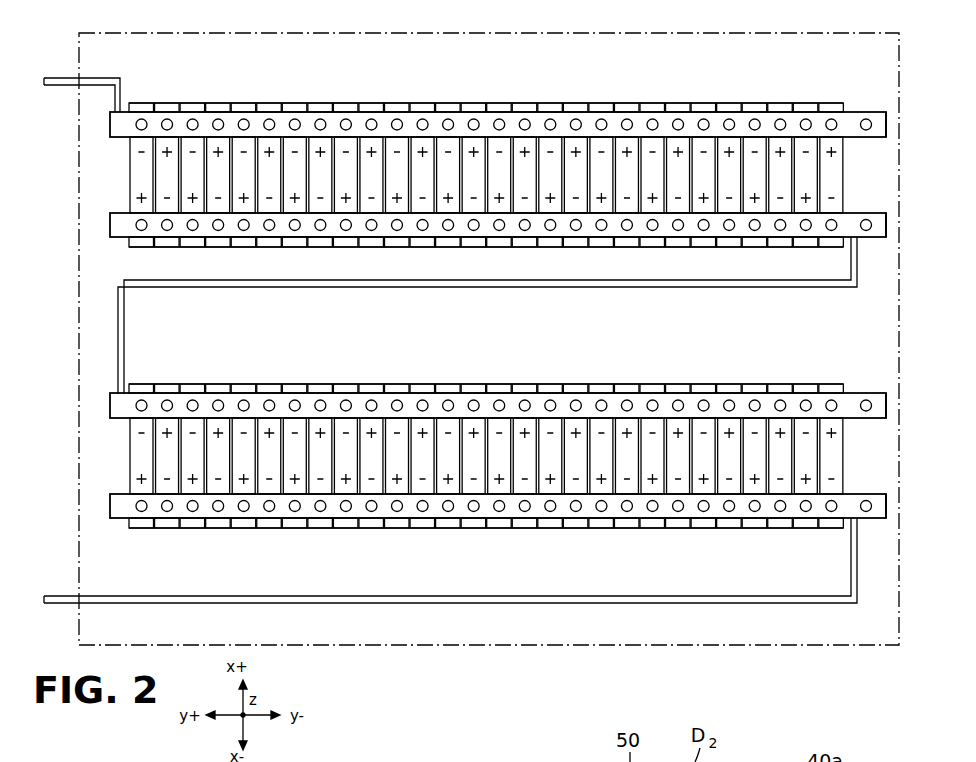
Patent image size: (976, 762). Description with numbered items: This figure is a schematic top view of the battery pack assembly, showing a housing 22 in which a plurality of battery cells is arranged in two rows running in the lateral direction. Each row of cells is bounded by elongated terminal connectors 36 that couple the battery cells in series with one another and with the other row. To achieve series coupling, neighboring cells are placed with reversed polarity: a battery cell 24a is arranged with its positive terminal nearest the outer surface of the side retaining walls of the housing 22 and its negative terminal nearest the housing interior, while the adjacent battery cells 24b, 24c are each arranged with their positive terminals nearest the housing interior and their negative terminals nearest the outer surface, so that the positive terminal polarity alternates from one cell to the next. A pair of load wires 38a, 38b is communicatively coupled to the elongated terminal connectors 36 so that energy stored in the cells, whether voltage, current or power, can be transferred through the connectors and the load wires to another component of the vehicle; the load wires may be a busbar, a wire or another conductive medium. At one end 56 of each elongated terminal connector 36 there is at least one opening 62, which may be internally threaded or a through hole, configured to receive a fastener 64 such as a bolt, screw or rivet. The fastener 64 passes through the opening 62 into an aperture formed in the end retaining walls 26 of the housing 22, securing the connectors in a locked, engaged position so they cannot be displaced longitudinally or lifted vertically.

The housing 22 is at (78, 199).
The battery cell 24a is at (189, 103).
The adjacent battery cell 24b is at (173, 103).
The adjacent battery cell 24c is at (220, 103).
The end retaining wall 26 is at (868, 578).
The elongated terminal connector 36 is at (730, 98).
The load wire 38a is at (67, 78).
The load wire 38b is at (67, 596).
The end of the elongated terminal connector 56 is at (103, 125).
The opening 62 is at (873, 127).
The fastener 64 is at (866, 118).